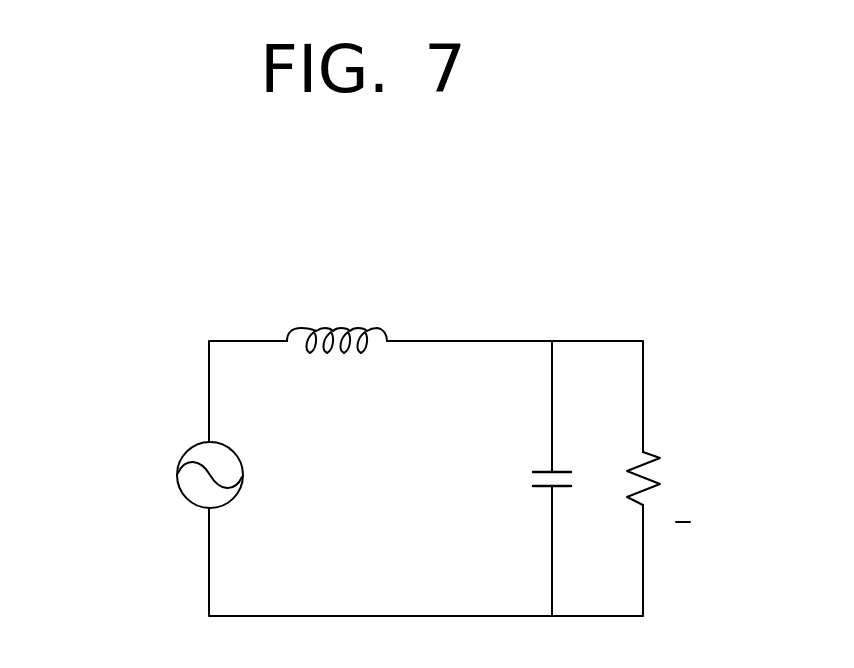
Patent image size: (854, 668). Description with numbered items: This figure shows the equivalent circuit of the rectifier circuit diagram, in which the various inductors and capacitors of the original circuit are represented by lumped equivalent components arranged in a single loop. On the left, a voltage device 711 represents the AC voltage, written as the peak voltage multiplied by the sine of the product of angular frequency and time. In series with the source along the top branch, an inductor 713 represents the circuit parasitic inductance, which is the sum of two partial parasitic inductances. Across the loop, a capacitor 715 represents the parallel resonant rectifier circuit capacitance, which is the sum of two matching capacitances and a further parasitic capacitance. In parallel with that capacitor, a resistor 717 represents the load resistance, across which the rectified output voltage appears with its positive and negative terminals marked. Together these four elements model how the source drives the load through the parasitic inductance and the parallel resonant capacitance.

The voltage device 711 is at (187, 450).
The inductor 713 is at (305, 347).
The capacitor 715 is at (542, 472).
The resistor 717 is at (652, 452).